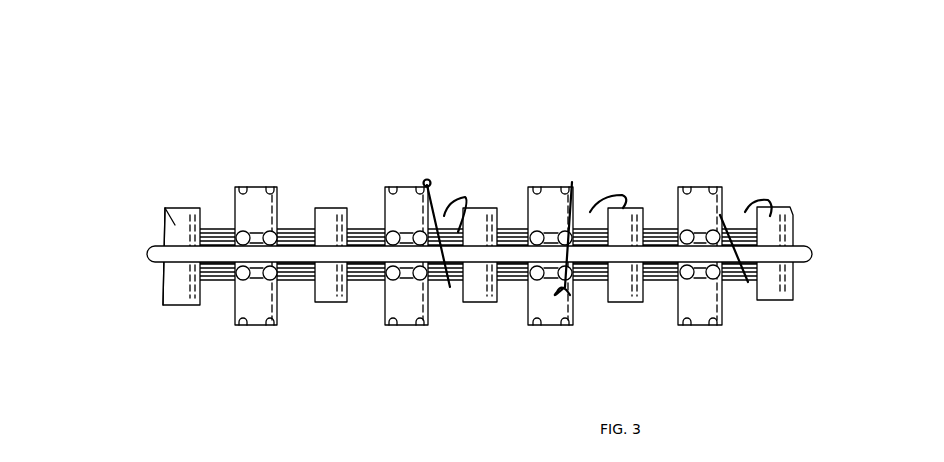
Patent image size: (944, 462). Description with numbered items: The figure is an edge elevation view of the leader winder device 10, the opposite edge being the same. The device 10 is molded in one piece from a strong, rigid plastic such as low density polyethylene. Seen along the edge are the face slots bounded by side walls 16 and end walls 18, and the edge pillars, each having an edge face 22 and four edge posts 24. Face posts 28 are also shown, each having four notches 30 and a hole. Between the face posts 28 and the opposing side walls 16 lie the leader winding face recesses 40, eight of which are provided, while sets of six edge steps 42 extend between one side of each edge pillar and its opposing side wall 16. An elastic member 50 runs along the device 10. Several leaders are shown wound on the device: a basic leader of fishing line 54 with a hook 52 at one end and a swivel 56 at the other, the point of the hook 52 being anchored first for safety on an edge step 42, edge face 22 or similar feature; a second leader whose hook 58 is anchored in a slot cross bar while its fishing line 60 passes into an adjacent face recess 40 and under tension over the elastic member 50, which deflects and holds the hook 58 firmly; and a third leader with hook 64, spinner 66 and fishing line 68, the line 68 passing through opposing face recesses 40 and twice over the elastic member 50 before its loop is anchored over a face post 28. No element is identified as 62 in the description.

The leader winder device 10 is at (545, 84).
The side walls 16 is at (196, 208).
The end walls 18 is at (175, 212).
The edge face 22 is at (256, 325).
The edge posts 24 is at (257, 187).
The face posts 28 is at (252, 187).
The notches 30 is at (247, 186).
The leader winding face recesses 40 is at (213, 222).
The edge steps 42 is at (223, 228).
The elastic member 50 is at (153, 258).
The hook 52 is at (476, 198).
The fishing line 54 is at (444, 215).
The swivel 56 is at (427, 183).
The hook 58 is at (605, 213).
The fishing line 60 is at (583, 212).
The strap 62 is at (566, 183).
The hook 64 is at (785, 217).
The spinner 66 is at (768, 202).
The fishing line 68 is at (738, 210).